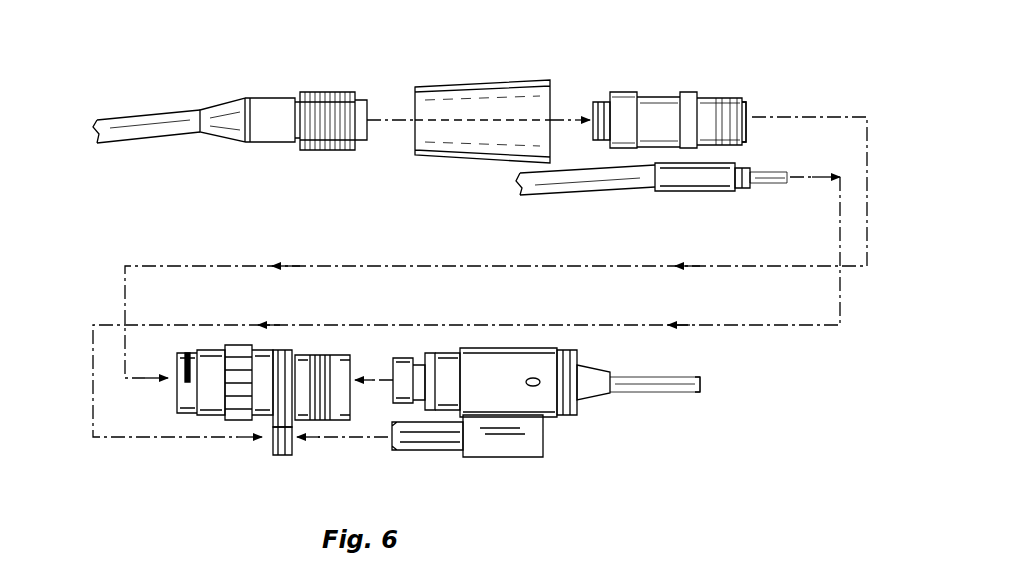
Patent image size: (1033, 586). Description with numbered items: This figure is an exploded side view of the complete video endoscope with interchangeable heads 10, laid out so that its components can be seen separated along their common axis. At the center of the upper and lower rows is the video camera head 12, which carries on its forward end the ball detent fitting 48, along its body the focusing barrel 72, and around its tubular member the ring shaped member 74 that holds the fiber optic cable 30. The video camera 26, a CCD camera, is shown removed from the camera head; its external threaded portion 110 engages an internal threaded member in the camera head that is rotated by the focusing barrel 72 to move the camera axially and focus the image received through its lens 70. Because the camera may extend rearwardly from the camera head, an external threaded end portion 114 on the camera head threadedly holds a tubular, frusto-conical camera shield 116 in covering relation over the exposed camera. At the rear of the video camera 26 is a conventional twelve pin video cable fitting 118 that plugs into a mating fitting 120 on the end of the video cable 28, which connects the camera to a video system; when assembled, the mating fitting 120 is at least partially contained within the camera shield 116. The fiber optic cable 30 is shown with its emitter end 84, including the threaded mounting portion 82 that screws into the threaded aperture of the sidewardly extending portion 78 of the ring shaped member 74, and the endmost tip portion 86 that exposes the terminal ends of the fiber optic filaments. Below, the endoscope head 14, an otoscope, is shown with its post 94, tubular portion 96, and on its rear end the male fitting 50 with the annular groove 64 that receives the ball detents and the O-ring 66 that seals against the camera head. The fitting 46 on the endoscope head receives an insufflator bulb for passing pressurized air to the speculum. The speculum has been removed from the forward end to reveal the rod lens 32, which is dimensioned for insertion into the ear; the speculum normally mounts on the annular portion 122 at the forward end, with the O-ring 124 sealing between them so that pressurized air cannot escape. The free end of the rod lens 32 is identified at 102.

The video endoscope with interchangeable endoscope heads 10 is at (665, 435).
The video camera head 12 is at (229, 397).
The endoscope head 14 is at (565, 397).
The video camera 26 is at (702, 90).
The video cable 28 is at (93, 137).
The fiber optic cable 30 is at (623, 197).
The rod lens 32 is at (693, 404).
The fitting 46 is at (538, 386).
The ball detent fitting 48 is at (325, 355).
The male fitting 50 is at (393, 354).
The annular groove 64 is at (420, 355).
The O-ring 66 is at (432, 353).
The lens 70 is at (742, 110).
The focusing barrel 72 is at (238, 345).
The ring shaped member 74 is at (285, 350).
The sidewardly extending portion 78 is at (288, 455).
The threaded mounting portion 82 is at (740, 191).
The emitter end 84 is at (770, 170).
The endmost tip portion 86 is at (788, 182).
The post 94 is at (510, 458).
The tubular portion 96 is at (425, 451).
The cable end 102 is at (690, 372).
The external threaded portion 110 is at (720, 98).
The external threaded end portion 114 is at (188, 355).
The camera shield 116 is at (473, 82).
The video cable fitting 118 is at (598, 100).
The mating fitting 120 is at (355, 150).
The annular portion 122 is at (583, 348).
The O-ring 124 is at (570, 350).